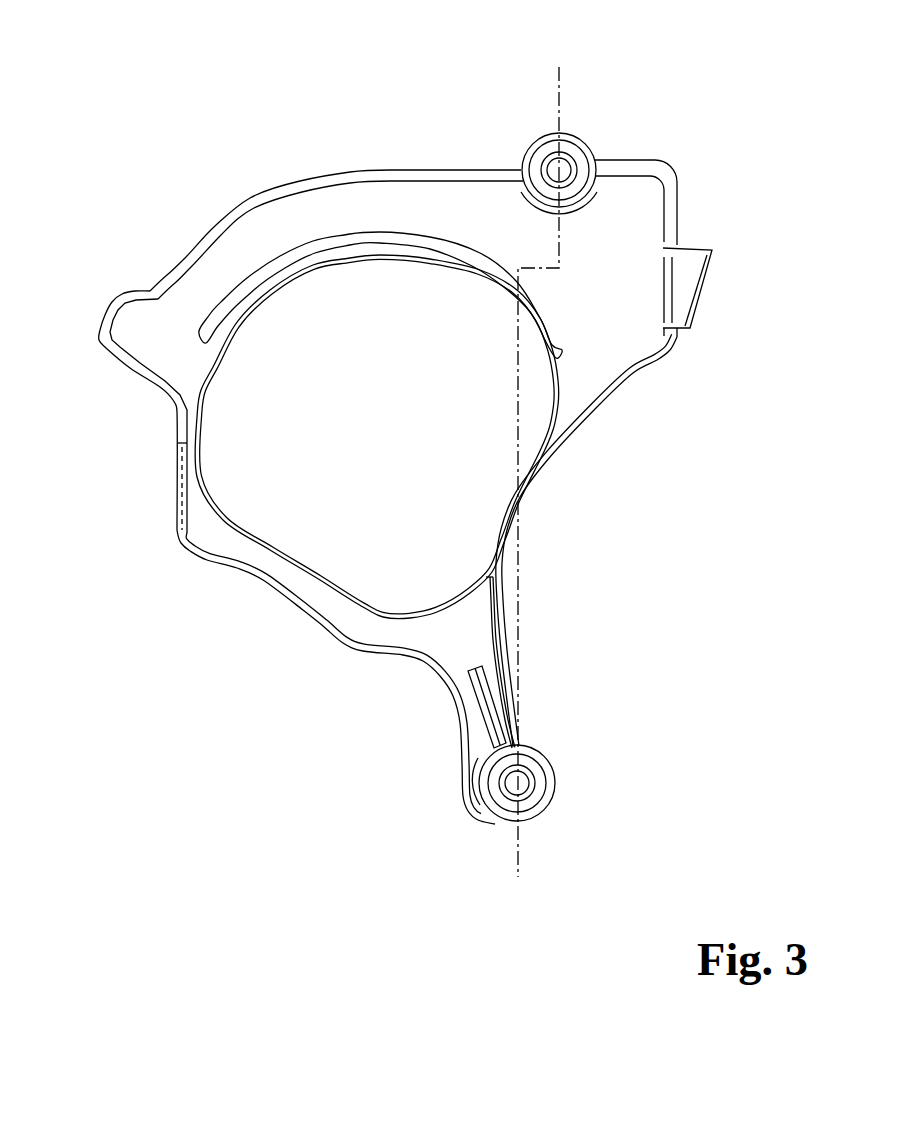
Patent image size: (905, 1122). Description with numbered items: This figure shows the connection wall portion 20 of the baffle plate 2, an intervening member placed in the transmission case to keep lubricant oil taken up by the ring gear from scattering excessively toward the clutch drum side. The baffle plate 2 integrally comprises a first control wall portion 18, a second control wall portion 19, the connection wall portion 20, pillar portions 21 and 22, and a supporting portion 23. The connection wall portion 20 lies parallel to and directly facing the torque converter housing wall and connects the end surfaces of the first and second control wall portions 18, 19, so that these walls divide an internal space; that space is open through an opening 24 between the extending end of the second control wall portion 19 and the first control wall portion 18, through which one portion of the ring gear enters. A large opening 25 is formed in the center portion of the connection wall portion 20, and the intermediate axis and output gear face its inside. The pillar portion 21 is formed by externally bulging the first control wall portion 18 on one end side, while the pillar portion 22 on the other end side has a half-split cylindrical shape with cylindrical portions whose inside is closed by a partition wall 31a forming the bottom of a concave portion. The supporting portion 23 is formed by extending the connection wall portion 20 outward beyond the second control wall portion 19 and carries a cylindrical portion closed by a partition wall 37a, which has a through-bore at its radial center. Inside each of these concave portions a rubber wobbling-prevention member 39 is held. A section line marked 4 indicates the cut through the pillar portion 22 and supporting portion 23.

The baffle plate 2 is at (248, 72).
The first control wall portion 18 is at (310, 177).
The second control wall portion 19 is at (593, 410).
The connection wall portion 20 is at (407, 210).
The pillar portion 21 is at (108, 310).
The pillar portion 22 is at (583, 158).
The partition wall 31a is at (593, 150).
The supporting portion 23 is at (557, 775).
The partition wall 37a is at (537, 763).
The wobbling-prevention member 39 is at (550, 163).
The opening 24 is at (257, 552).
The opening 25 is at (367, 572).
The section line IV-IV 4 is at (559, 78).